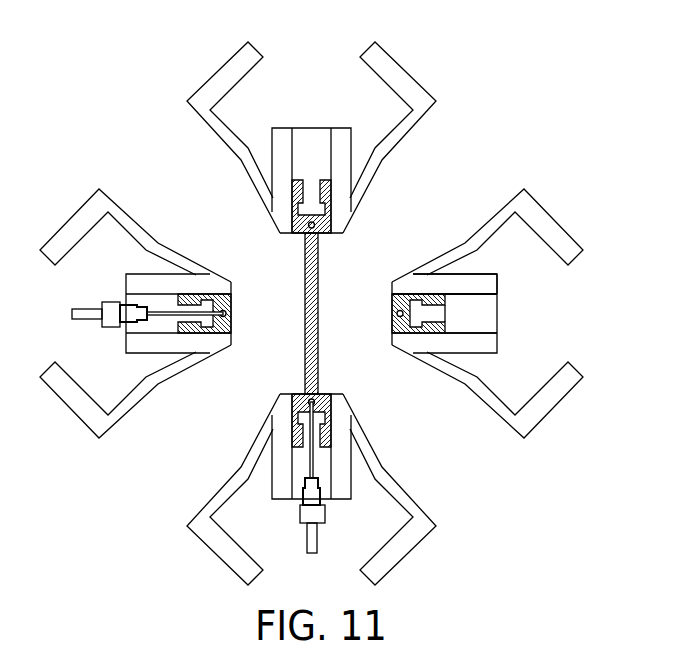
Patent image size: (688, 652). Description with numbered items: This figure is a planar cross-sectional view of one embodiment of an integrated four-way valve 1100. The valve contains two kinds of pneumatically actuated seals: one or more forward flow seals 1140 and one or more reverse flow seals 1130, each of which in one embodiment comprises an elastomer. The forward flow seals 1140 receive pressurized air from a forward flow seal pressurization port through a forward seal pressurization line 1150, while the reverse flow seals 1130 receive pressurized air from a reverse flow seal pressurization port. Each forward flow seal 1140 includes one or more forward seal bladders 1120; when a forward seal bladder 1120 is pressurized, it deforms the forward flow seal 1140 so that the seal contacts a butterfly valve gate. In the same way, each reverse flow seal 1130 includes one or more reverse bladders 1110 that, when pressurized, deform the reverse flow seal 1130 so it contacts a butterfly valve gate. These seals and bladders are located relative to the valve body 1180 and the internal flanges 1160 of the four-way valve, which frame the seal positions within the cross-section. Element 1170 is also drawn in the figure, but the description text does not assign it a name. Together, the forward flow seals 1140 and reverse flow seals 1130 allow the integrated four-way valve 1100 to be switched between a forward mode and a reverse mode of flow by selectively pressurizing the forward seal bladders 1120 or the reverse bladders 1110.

The integrated four-way valve 1100 is at (458, 50).
The reverse bladder 1110 is at (396, 314).
The forward seal bladder 1120 is at (298, 394).
The reverse flow seal 1130 is at (233, 303).
The forward flow seal 1140 is at (333, 226).
The forward seal pressurization line 1150 is at (158, 316).
The internal flange 1160 is at (477, 282).
The valve body 1180 is at (473, 308).
The arm 1170 is at (527, 205).